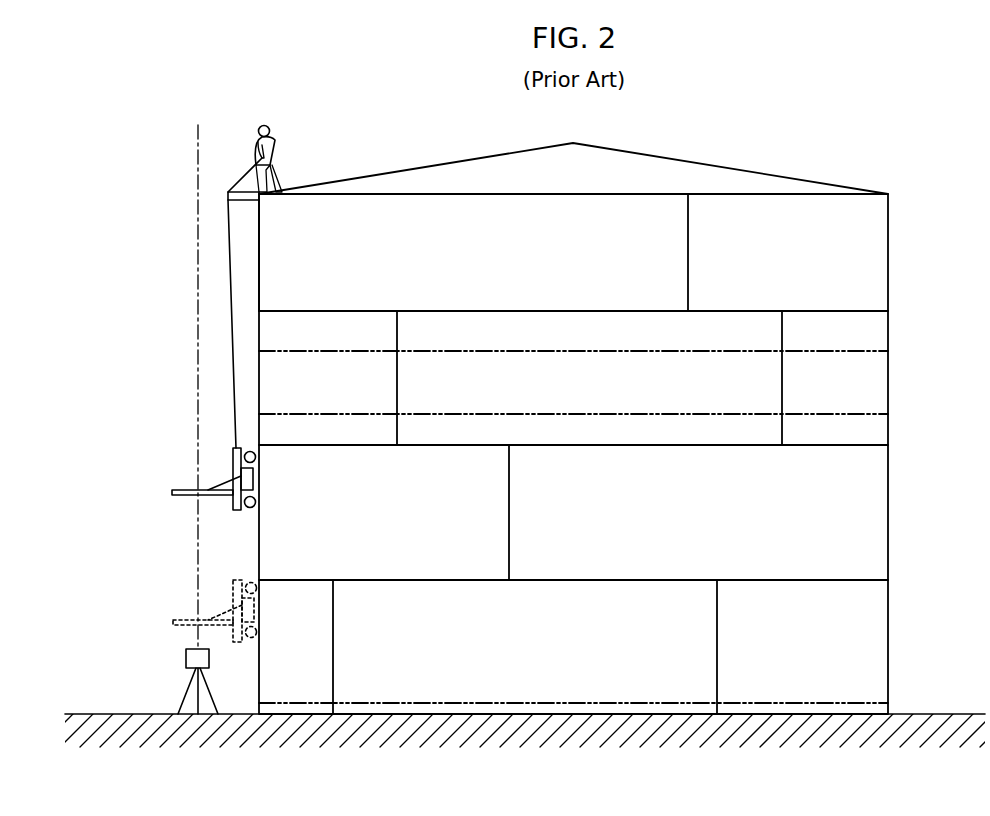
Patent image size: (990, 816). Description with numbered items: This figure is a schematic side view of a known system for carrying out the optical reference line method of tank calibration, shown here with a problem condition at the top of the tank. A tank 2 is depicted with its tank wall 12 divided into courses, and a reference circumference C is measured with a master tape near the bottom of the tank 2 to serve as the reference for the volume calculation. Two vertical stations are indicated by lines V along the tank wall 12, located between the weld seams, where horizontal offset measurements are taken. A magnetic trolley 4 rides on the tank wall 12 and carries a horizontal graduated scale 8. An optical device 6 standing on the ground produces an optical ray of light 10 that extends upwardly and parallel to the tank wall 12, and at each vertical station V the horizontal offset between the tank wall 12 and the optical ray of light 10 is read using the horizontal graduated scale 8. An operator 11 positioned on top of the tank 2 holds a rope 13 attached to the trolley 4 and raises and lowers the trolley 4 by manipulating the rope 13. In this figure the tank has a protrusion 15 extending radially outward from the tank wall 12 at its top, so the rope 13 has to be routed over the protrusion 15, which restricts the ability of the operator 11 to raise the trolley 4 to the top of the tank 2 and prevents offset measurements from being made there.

The tank 2 is at (889, 243).
The magnetic trolley 4 is at (232, 464).
The optical device 6 is at (150, 684).
The horizontal graduated scale 8 is at (185, 496).
The optical ray of light 10 is at (197, 212).
The operator 11 is at (277, 148).
The tank wall 12 is at (261, 266).
The rope 13 is at (233, 332).
The protrusion 15 is at (243, 190).
The vertical stations V is at (523, 350).
The reference circumference C is at (772, 703).